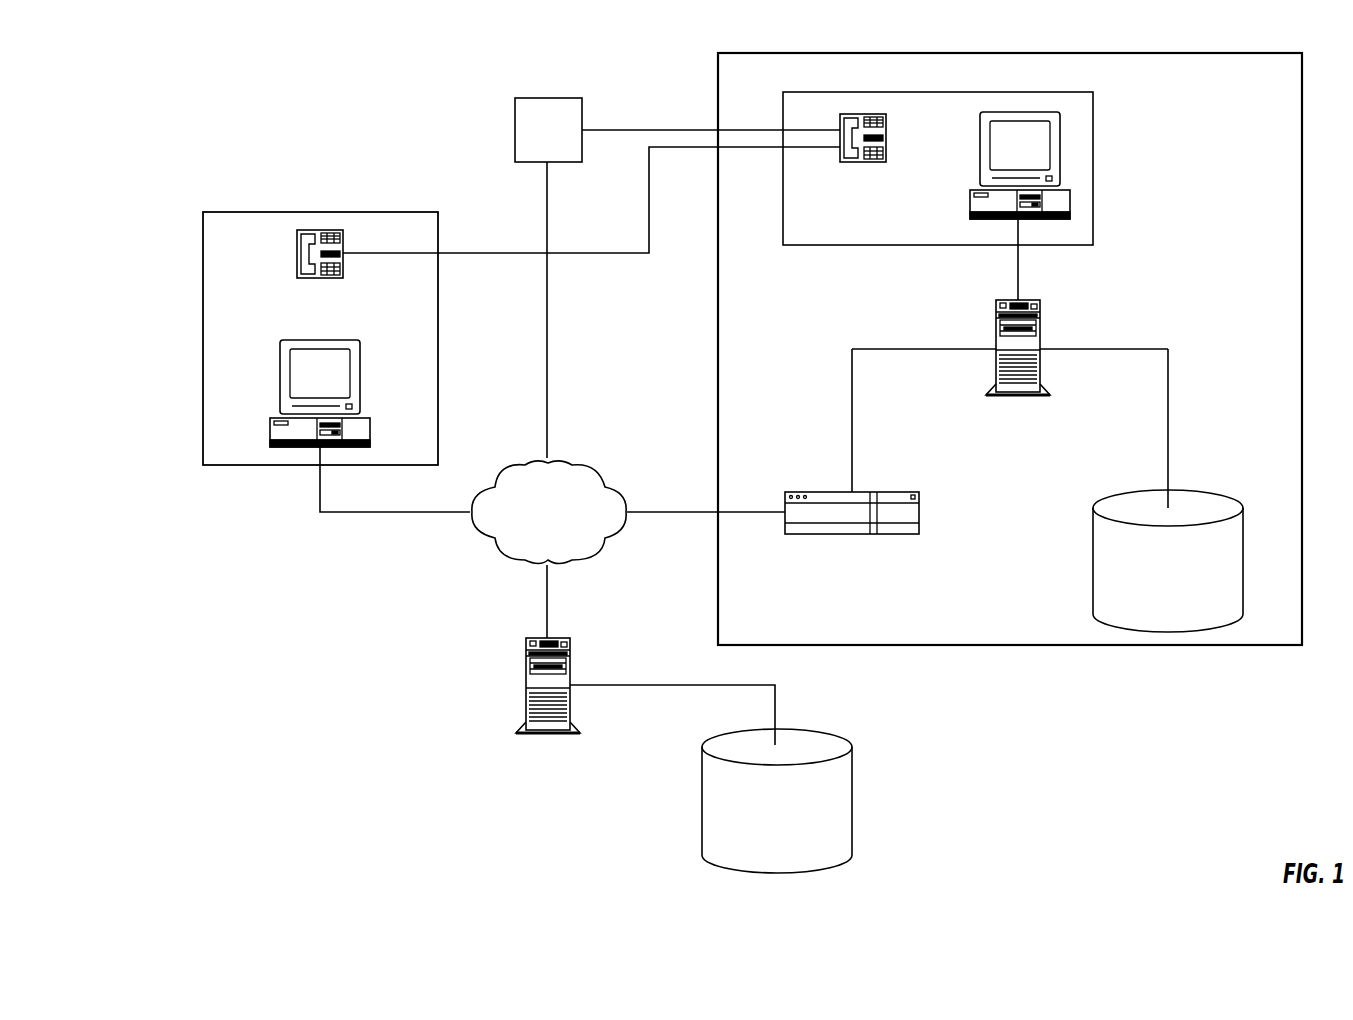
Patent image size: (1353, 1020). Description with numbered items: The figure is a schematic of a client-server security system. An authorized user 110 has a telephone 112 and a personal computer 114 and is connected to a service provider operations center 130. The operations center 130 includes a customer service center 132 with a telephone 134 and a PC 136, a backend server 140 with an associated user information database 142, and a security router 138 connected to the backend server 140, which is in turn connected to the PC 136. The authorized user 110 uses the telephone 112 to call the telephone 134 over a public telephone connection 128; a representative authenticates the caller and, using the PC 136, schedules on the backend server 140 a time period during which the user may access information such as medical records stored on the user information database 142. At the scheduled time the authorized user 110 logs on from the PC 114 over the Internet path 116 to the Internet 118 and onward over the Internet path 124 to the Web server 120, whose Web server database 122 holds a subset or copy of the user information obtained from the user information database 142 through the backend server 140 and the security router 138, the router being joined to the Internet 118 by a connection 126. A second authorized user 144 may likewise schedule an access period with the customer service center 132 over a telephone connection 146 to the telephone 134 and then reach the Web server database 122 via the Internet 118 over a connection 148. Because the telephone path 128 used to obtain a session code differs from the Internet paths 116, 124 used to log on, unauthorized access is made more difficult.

The authorized user 110 is at (265, 467).
The telephone 112 is at (297, 256).
The personal computer 114 is at (280, 381).
The Internet path 116 is at (410, 518).
The Internet 118 is at (522, 458).
The Web server 120 is at (526, 684).
The Web server database 122 is at (757, 730).
The Internet path 124 is at (547, 604).
The connection between Internet and security router 126 is at (702, 516).
The public telephone connection 128 is at (649, 211).
The service provider operations center 130 is at (1240, 52).
The customer service center 132 is at (838, 247).
The telephone 134 is at (888, 137).
The personal computer 136 is at (1062, 151).
The security router 138 is at (840, 492).
The backend server 140 is at (1042, 327).
The user information database 142 is at (1178, 490).
The authorized user 144 is at (537, 163).
The telephone connection 146 is at (662, 130).
The Internet connection 148 is at (548, 349).